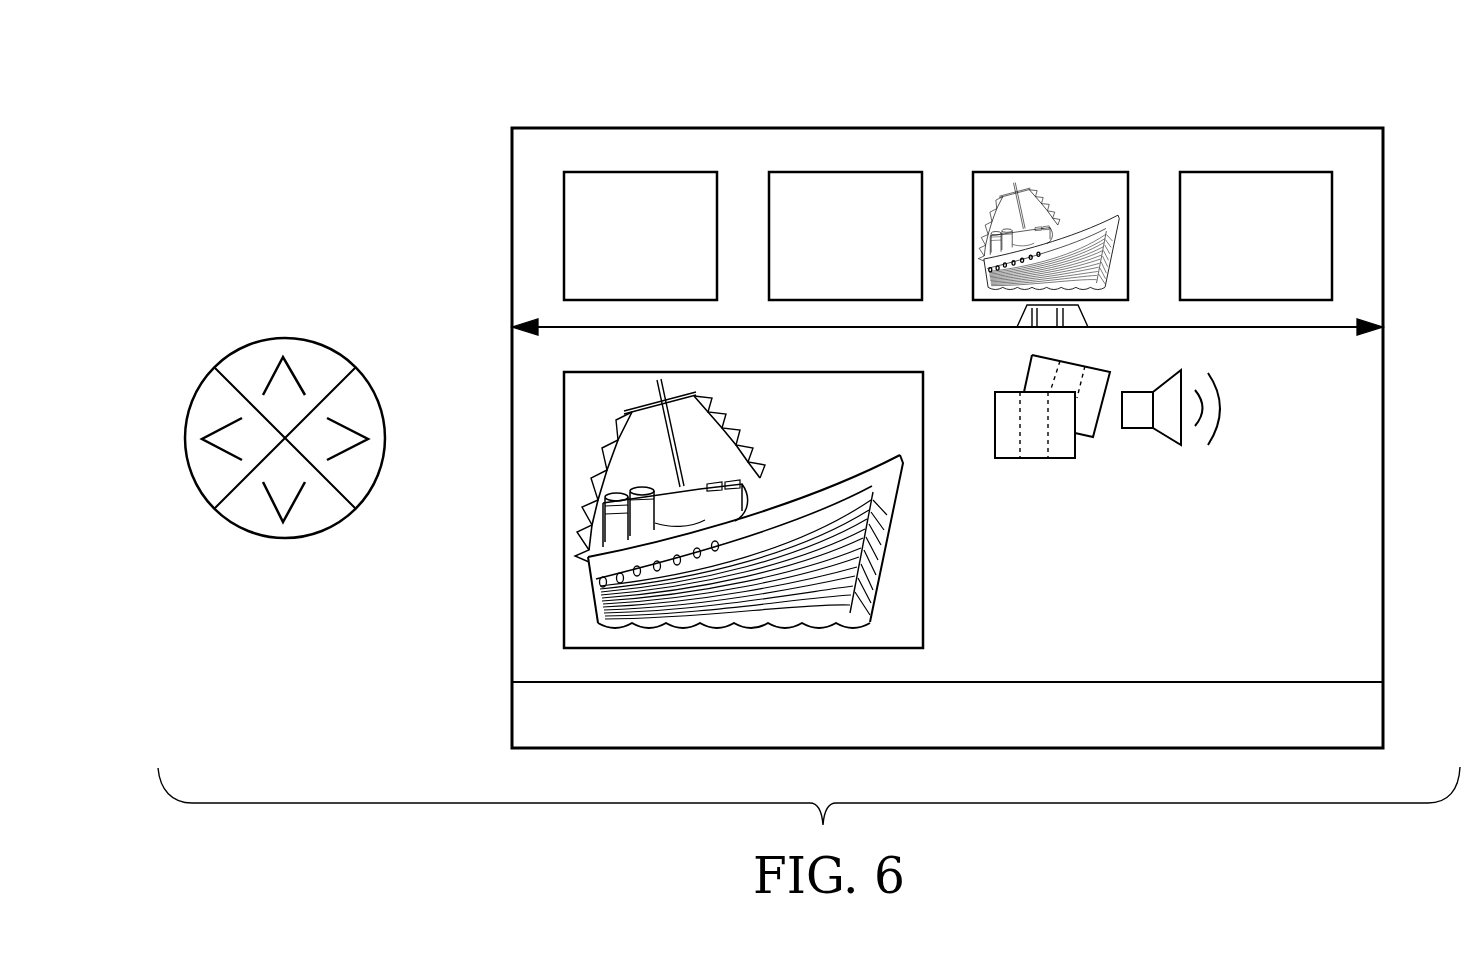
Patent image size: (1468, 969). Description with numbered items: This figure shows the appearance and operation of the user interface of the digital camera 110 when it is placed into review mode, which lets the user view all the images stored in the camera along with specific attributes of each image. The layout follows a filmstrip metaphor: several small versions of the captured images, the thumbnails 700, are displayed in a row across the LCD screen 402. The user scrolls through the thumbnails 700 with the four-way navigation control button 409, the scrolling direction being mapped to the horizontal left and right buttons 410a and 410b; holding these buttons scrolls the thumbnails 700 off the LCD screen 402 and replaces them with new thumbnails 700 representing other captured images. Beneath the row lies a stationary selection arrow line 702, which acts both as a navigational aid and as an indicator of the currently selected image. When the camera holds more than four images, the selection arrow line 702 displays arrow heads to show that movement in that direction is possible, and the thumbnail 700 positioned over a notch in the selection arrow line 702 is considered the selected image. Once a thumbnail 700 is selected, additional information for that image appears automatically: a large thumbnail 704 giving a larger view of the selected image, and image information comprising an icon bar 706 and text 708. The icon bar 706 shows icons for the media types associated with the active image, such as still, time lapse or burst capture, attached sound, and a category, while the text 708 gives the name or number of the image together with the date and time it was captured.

The digital camera 110 is at (925, 42).
The LCD screen 402 is at (512, 718).
The four-way navigation control button 409 is at (267, 339).
The left button 410a is at (205, 497).
The right button 410b is at (365, 497).
The thumbnails 700 is at (1235, 172).
The selection arrow line 702 is at (560, 325).
The large thumbnail 704 is at (564, 426).
The icon bar 706 is at (1275, 407).
The text 708 is at (1275, 525).